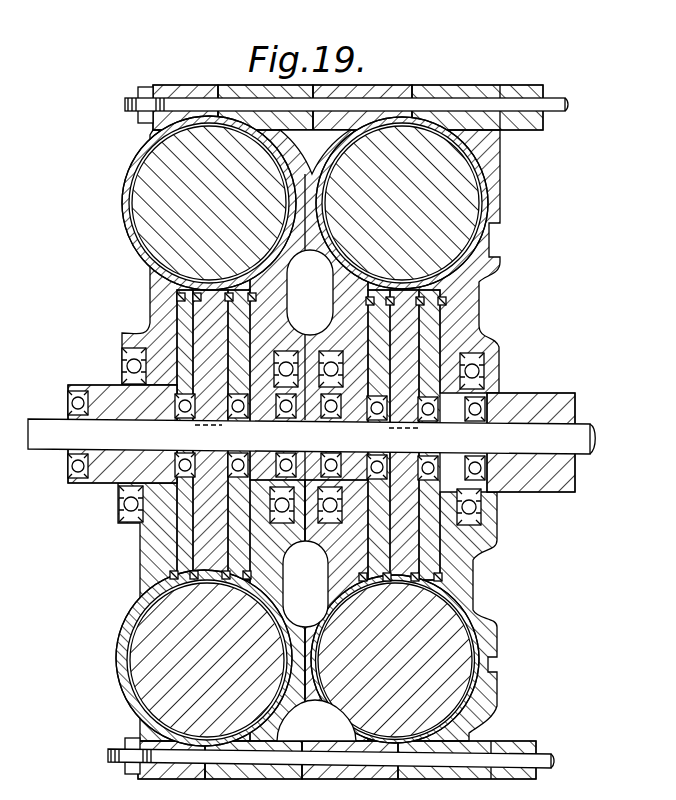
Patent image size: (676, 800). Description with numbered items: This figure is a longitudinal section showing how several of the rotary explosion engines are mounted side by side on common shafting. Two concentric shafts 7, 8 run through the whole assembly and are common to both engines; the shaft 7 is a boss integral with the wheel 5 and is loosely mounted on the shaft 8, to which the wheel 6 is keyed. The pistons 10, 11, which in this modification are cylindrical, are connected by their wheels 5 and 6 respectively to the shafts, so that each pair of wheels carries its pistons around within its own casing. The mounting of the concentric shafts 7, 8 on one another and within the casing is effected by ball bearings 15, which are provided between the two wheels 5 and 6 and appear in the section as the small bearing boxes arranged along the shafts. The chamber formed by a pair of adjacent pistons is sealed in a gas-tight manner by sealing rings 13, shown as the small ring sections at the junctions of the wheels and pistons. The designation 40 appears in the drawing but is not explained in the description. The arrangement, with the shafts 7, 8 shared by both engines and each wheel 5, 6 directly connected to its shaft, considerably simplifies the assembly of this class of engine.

The wheel 5 is at (183, 530).
The wheel 6 is at (205, 540).
The shaft 7 is at (112, 475).
The shaft 8 is at (46, 426).
The piston element 10 is at (153, 670).
The piston element 11 is at (165, 176).
The sealing rings 13 is at (193, 301).
The ball bearings 15 is at (125, 363).
The journal 40 is at (222, 425).